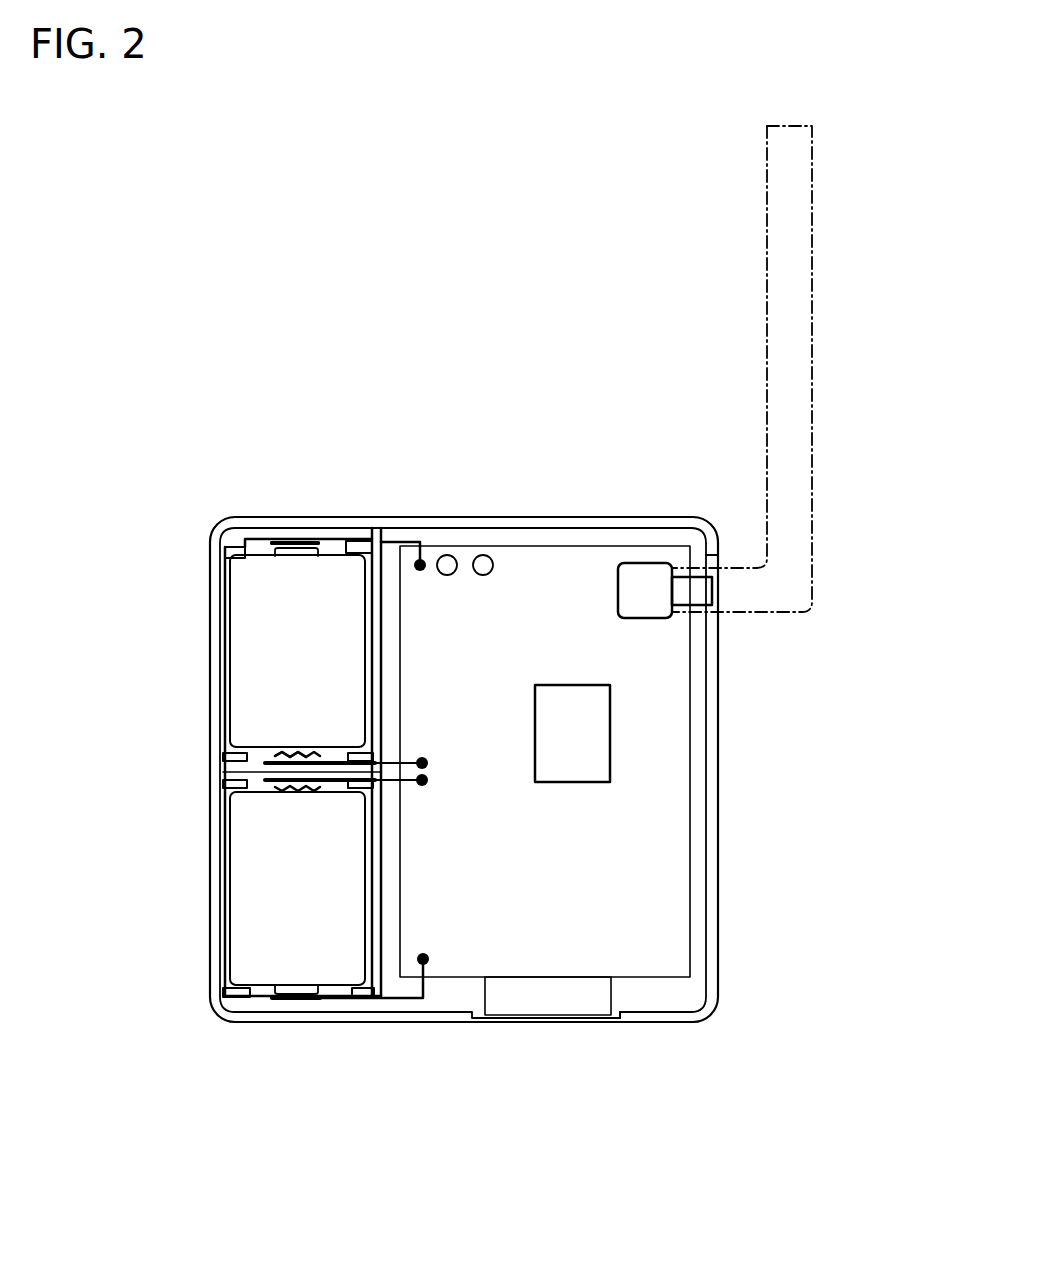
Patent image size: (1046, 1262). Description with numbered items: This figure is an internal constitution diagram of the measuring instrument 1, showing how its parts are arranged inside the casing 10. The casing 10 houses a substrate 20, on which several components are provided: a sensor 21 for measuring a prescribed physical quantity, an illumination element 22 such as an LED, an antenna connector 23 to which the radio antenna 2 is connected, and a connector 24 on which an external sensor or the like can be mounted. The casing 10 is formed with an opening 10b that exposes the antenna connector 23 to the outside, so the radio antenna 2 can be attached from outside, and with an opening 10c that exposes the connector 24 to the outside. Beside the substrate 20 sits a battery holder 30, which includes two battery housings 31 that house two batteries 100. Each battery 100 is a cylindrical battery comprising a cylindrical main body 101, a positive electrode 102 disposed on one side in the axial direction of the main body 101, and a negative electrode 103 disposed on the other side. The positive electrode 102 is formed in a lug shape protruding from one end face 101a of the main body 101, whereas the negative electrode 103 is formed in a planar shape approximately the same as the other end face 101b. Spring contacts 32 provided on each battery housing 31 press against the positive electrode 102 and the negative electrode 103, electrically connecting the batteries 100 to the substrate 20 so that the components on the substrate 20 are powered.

The measuring instrument 1 is at (402, 440).
The radio antenna 2 is at (812, 245).
The casing 10 is at (551, 517).
The opening 10b is at (715, 560).
The opening 10c is at (620, 1015).
The substrate 20 is at (692, 728).
The sensor 21 is at (612, 730).
The illumination element 22 is at (447, 553).
The antenna connector 23 is at (645, 563).
The connector 24 is at (550, 1018).
The battery holder 30 is at (267, 518).
The battery housing 31 is at (216, 650).
The spring contact 32 is at (293, 557).
The battery 100 is at (245, 617).
The main body 101 is at (250, 585).
The one end face 101a is at (255, 553).
The other end face 101b is at (247, 765).
The positive electrode 102 is at (310, 543).
The negative electrode 103 is at (277, 758).